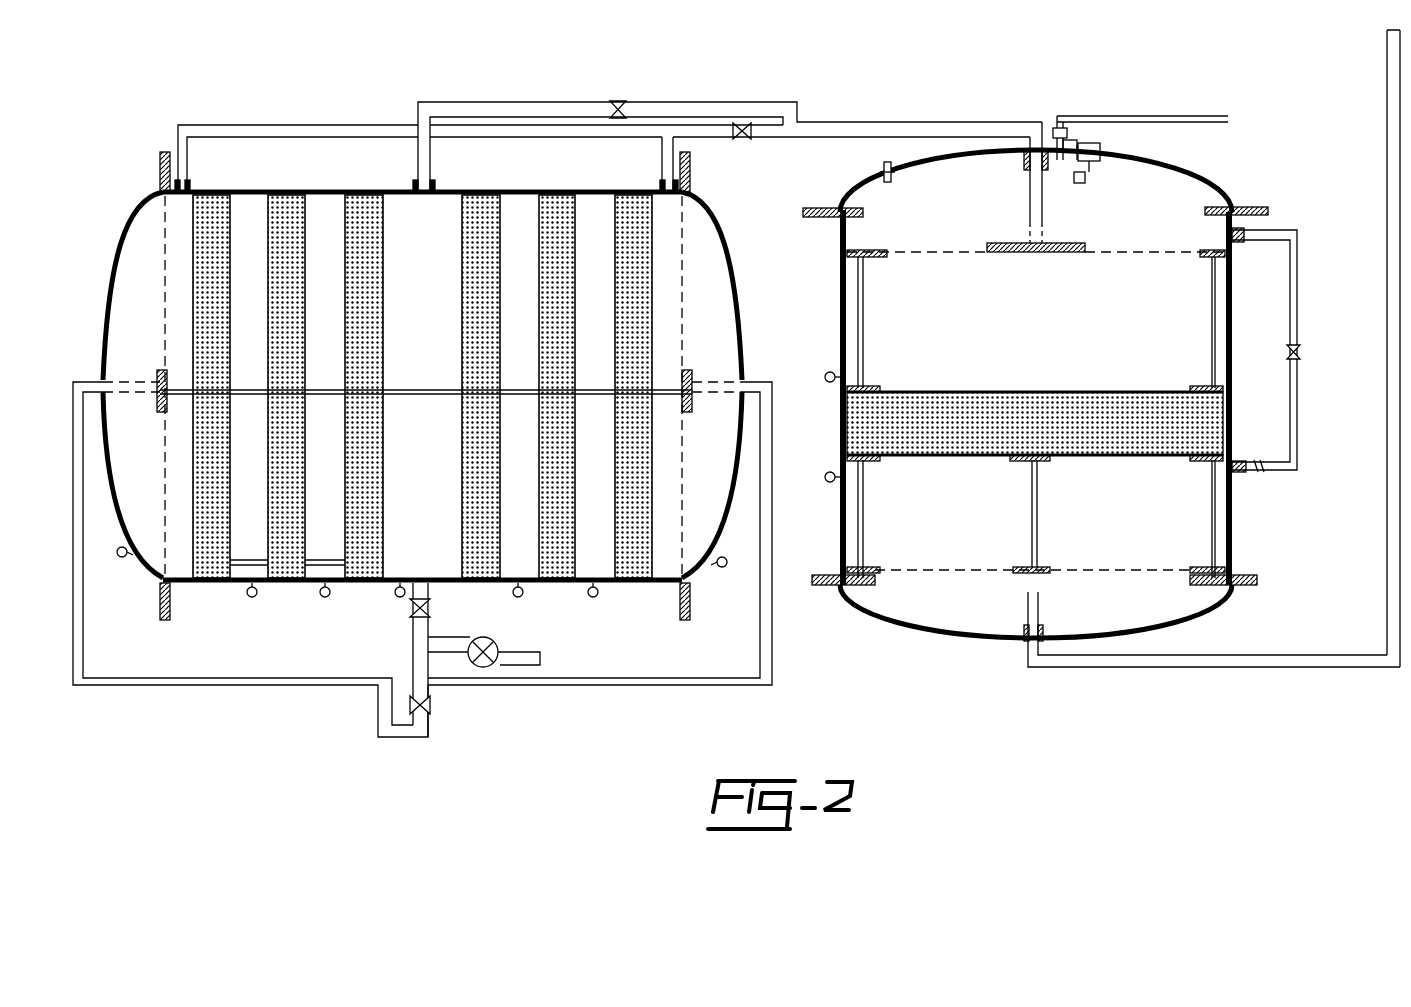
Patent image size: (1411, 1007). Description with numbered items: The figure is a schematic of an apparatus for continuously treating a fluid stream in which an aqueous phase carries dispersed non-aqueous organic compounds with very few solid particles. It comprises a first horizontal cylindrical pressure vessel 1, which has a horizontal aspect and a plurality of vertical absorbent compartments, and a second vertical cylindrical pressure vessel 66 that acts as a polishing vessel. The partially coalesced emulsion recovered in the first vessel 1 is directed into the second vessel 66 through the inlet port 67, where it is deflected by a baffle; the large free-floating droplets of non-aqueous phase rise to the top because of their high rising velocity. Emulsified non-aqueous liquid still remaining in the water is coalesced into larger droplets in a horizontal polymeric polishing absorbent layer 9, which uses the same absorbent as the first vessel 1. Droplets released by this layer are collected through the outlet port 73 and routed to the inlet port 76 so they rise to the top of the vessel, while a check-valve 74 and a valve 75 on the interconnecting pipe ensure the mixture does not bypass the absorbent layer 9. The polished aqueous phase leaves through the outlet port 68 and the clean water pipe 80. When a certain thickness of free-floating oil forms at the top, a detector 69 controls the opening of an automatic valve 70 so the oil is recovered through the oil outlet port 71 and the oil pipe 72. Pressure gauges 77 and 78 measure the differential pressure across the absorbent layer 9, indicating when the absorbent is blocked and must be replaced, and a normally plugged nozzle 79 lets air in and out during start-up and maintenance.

The first horizontal cylindrical pressure vessel 1 is at (126, 226).
The horizontal polymeric polishing absorbent layer 9 is at (1202, 425).
The second vertical cylindrical pressure vessel 66 is at (1150, 156).
The inlet port 67 is at (1037, 153).
The outlet port 68 is at (1028, 643).
The detector 69 is at (1102, 152).
The automatic valve 70 is at (1065, 126).
The oil outlet port 71 is at (1068, 150).
The oil pipe 72 is at (1212, 130).
The outlet port 73 is at (1237, 474).
The check-valve 74 is at (1268, 470).
The valve 75 is at (1307, 352).
The inlet port 76 is at (1242, 232).
The pressure gauge 77 is at (827, 366).
The pressure gauge 78 is at (827, 466).
The nozzle 79 is at (888, 160).
The clean water pipe 80 is at (1384, 73).